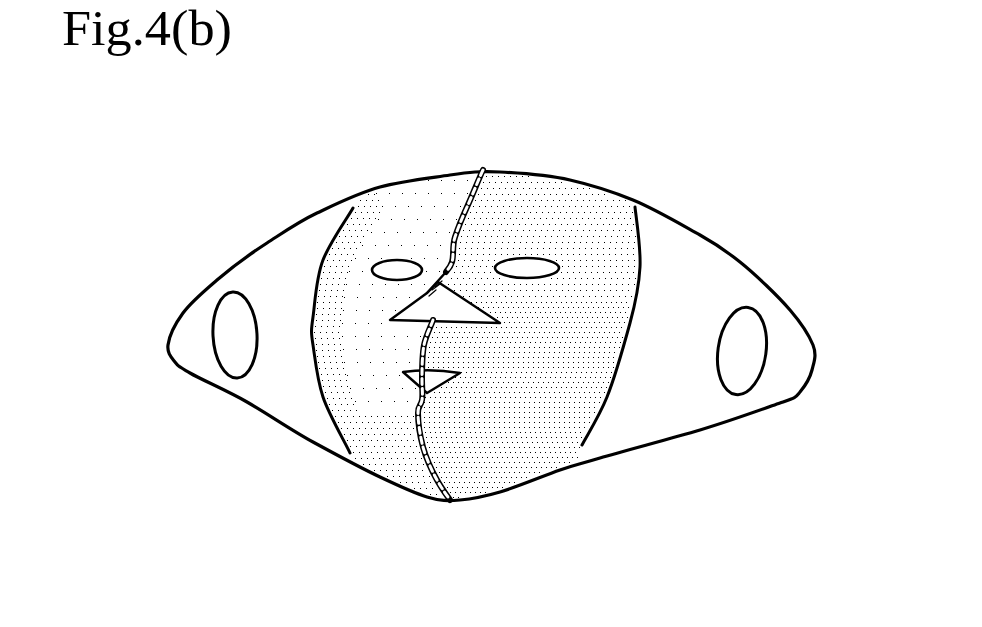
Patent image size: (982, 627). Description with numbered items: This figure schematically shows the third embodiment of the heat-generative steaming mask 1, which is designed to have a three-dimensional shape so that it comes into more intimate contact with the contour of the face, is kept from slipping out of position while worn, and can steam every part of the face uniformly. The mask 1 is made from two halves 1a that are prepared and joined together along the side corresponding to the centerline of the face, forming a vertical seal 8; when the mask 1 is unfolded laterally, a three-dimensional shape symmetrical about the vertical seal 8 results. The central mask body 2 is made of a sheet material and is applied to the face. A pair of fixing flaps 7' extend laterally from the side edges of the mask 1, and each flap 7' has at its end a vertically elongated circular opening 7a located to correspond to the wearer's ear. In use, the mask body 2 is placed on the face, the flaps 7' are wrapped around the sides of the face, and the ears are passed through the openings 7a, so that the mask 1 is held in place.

The steaming mask 1 is at (633, 162).
The halves of the mask 1a is at (390, 437).
The mask body 2 is at (378, 180).
The fixing flaps 7' is at (501, 189).
The vertically elongated circular opening 7a is at (740, 335).
The vertical seal 8 is at (482, 170).